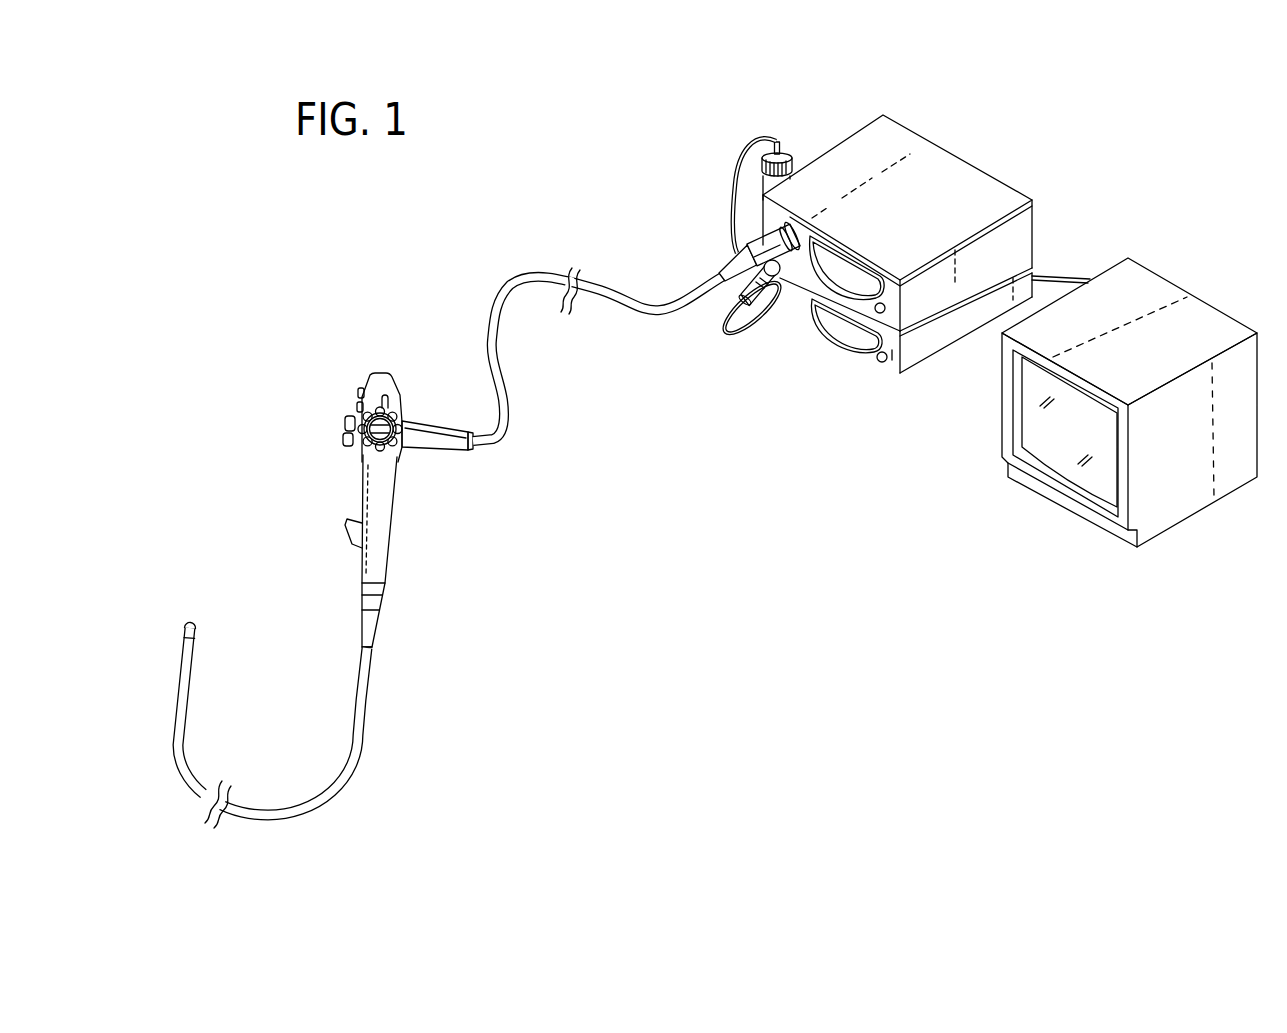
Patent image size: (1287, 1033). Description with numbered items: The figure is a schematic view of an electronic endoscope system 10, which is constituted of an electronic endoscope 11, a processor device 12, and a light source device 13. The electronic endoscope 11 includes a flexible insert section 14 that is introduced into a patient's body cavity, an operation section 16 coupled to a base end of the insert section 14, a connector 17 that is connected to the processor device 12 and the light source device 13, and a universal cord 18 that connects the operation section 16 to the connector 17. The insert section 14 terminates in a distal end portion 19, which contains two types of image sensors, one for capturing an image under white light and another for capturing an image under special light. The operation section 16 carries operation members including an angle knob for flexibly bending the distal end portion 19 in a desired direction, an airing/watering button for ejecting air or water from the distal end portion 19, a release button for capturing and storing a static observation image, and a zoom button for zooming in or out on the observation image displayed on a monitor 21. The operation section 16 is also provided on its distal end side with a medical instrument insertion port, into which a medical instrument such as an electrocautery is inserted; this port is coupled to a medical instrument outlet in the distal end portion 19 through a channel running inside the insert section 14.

The electronic endoscope system 10 is at (849, 663).
The electronic endoscope 11 is at (375, 358).
The processor device 12 is at (873, 360).
The light source device 13 is at (953, 178).
The insert section 14 is at (343, 788).
The operation section 16 is at (387, 470).
The connector 17 is at (730, 270).
The universal cord 18 is at (503, 362).
The distal end portion 19 is at (208, 620).
The monitor 21 is at (1168, 288).